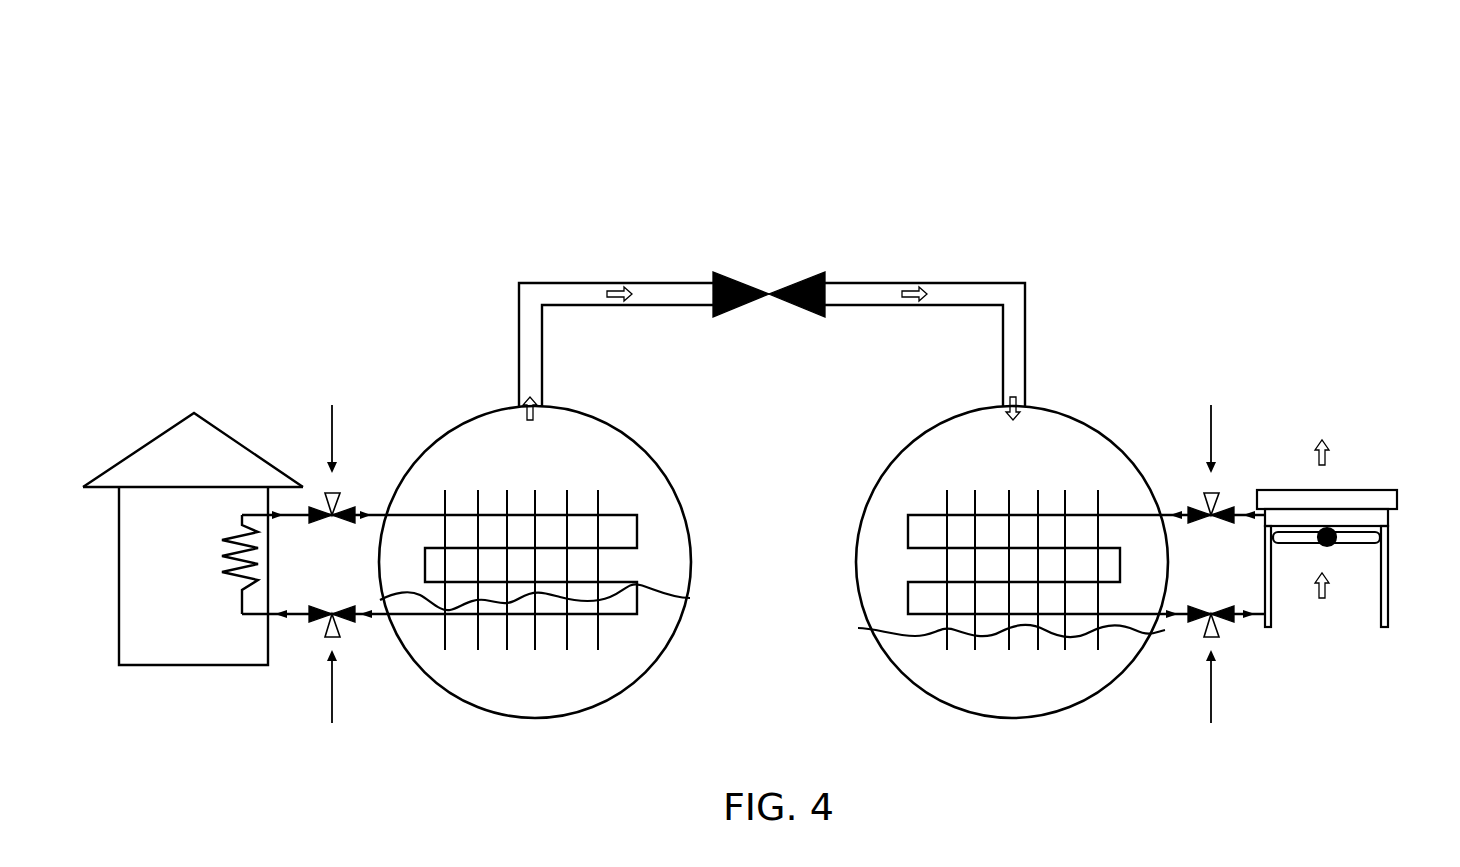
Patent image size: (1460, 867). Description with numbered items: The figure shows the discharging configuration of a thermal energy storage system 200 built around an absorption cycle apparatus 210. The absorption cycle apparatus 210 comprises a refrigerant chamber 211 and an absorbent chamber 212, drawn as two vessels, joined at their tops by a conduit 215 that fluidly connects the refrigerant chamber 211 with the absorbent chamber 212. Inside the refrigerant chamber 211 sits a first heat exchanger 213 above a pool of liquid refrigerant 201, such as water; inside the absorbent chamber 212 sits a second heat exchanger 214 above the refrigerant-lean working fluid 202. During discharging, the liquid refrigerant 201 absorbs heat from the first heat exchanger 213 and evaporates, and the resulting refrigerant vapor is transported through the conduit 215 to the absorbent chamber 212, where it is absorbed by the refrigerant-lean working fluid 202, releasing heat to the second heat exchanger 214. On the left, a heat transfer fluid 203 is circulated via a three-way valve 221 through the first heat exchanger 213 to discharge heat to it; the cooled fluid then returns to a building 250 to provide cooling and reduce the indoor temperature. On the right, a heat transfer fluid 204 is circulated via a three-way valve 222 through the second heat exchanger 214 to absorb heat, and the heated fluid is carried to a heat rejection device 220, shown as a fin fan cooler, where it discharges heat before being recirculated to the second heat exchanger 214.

The thermal energy storage system 200 is at (1306, 143).
The liquid refrigerant 201 is at (598, 663).
The refrigerant-lean working fluid 202 is at (1082, 663).
The heat transfer fluid 203 is at (290, 517).
The heat transfer fluid 204 is at (1133, 516).
The absorption cycle apparatus 210 is at (418, 242).
The refrigerant chamber 211 is at (503, 718).
The absorbent chamber 212 is at (998, 718).
The first heat exchanger 213 is at (613, 515).
The second heat exchanger 214 is at (972, 499).
The conduit 215 is at (665, 270).
The heat rejection device 220 is at (1388, 592).
The three-way valve 221 is at (344, 506).
The three-way valve 222 is at (1218, 630).
The building 250 is at (168, 665).